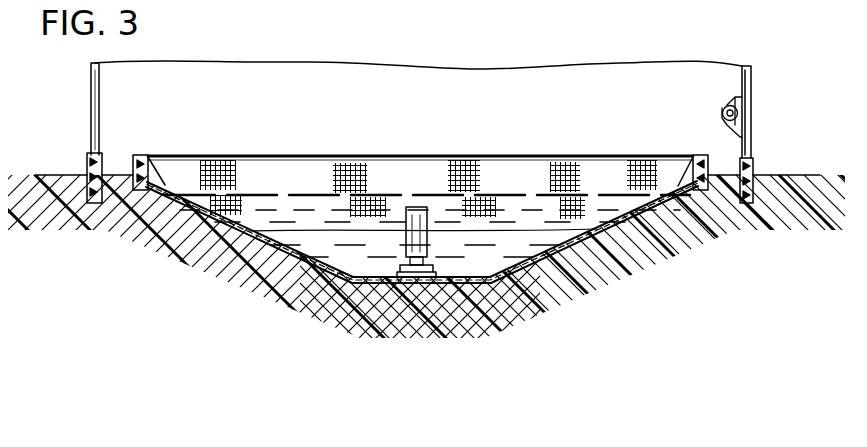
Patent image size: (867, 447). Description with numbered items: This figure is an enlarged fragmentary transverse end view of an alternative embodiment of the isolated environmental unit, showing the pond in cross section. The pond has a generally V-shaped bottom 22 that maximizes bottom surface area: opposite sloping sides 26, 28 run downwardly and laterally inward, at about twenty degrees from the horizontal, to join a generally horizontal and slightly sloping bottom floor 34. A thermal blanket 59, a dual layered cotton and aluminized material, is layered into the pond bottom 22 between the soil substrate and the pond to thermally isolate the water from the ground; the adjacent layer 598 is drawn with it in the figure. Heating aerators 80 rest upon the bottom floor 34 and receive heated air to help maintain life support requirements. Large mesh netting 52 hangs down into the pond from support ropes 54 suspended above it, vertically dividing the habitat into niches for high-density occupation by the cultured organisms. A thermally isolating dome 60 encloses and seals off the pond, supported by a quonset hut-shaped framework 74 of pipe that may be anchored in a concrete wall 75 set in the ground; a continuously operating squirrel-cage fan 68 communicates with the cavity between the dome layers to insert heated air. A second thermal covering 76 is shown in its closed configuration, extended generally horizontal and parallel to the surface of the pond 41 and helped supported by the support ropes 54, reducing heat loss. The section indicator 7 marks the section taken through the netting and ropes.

The V-shaped bottom 22 is at (277, 233).
The sloping side 26 is at (250, 237).
The sloping side 28 is at (607, 233).
The bottom floor 34 is at (438, 0).
The surface of the pond 41 is at (606, 197).
The large mesh netting 52 is at (592, 176).
The support ropes 54 is at (521, 158).
The thermal blanket 59 is at (312, 267).
The liner intermediate layer 598 is at (318, 262).
The thermally isolating dome 60 is at (91, 70).
The squirrel-cage fan 68 is at (742, 100).
The framework 74 is at (100, 76).
The concrete wall 75 is at (87, 170).
The second thermal covering 76 is at (173, 155).
The heating aerator 80 is at (412, 208).
The section line 7 is at (502, 126).